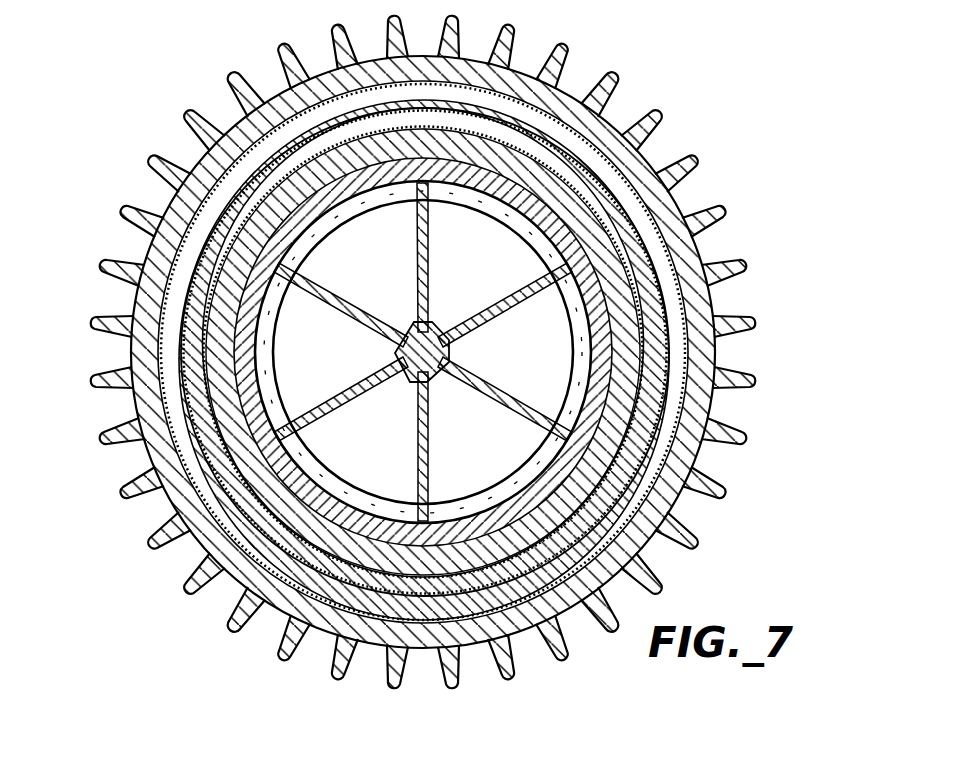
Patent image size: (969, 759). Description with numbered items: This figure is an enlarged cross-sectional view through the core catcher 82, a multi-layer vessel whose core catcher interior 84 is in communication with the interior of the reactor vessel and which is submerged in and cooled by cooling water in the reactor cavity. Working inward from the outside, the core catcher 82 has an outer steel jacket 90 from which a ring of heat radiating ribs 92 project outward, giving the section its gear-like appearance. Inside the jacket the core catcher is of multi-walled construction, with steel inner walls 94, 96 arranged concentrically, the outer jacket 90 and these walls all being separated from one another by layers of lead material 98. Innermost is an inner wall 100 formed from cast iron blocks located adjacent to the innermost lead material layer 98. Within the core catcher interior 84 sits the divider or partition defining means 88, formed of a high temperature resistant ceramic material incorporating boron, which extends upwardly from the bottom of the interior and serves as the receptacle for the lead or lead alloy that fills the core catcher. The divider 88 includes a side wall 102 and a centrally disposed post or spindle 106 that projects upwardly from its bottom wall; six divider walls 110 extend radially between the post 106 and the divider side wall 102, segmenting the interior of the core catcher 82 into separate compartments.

The core catcher 82 is at (393, 352).
The core catcher interior 84 is at (484, 258).
The divider or partition defining means 88 is at (395, 352).
The outer steel jacket 90 is at (153, 253).
The heat radiating ribs 92 is at (88, 307).
The inner wall 94 is at (652, 220).
The inner wall 96 is at (683, 495).
The layers of lead material 98 is at (605, 168).
The inner wall of cast iron blocks 100 is at (683, 457).
The divider side wall 102 is at (200, 530).
The post or spindle 106 is at (408, 328).
The divider walls 110 is at (483, 367).